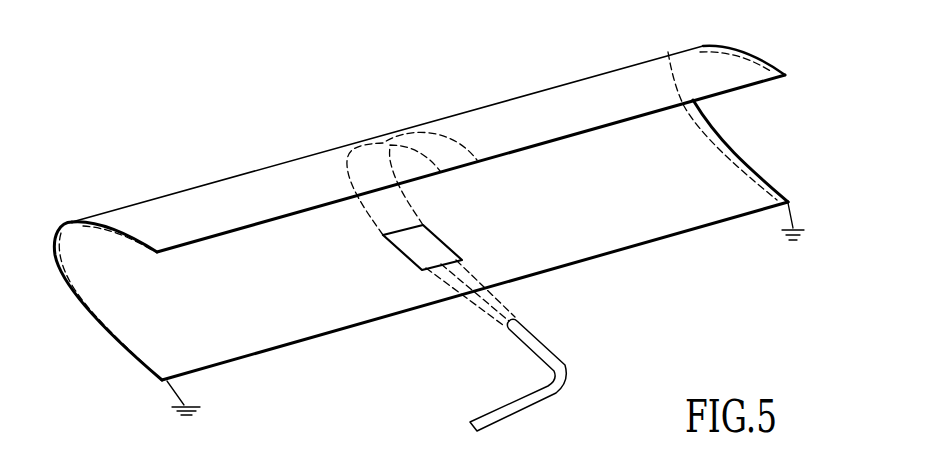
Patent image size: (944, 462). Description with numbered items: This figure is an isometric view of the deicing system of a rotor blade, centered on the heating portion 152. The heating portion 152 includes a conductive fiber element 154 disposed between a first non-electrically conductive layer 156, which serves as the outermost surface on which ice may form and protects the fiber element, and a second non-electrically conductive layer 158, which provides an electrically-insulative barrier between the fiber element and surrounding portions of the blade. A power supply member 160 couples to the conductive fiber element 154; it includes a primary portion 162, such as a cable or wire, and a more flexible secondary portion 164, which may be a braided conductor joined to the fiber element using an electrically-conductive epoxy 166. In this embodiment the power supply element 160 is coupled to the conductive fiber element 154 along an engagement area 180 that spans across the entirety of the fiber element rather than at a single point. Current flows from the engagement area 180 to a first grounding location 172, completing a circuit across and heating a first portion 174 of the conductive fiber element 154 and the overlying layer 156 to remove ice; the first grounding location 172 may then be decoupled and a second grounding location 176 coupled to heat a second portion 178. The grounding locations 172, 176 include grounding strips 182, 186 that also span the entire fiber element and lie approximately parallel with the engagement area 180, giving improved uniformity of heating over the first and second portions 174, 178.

The heating portion 152 is at (500, 83).
The conductive fiber element 154 is at (427, 250).
The first non-electrically conductive layer 156 is at (653, 83).
The second non-electrically conductive layer 158 is at (655, 220).
The power supply member 160 is at (552, 345).
The primary portion 162 is at (573, 323).
The secondary portion 164 is at (487, 307).
The electrically-conductive epoxy 166 is at (435, 243).
The first grounding location 172 is at (155, 403).
The first portion 174 is at (212, 311).
The second grounding location 176 is at (812, 207).
The second portion 178 is at (626, 191).
The engagement area 180 is at (357, 137).
The grounding strip 182 is at (128, 230).
The grounding strip 186 is at (740, 147).